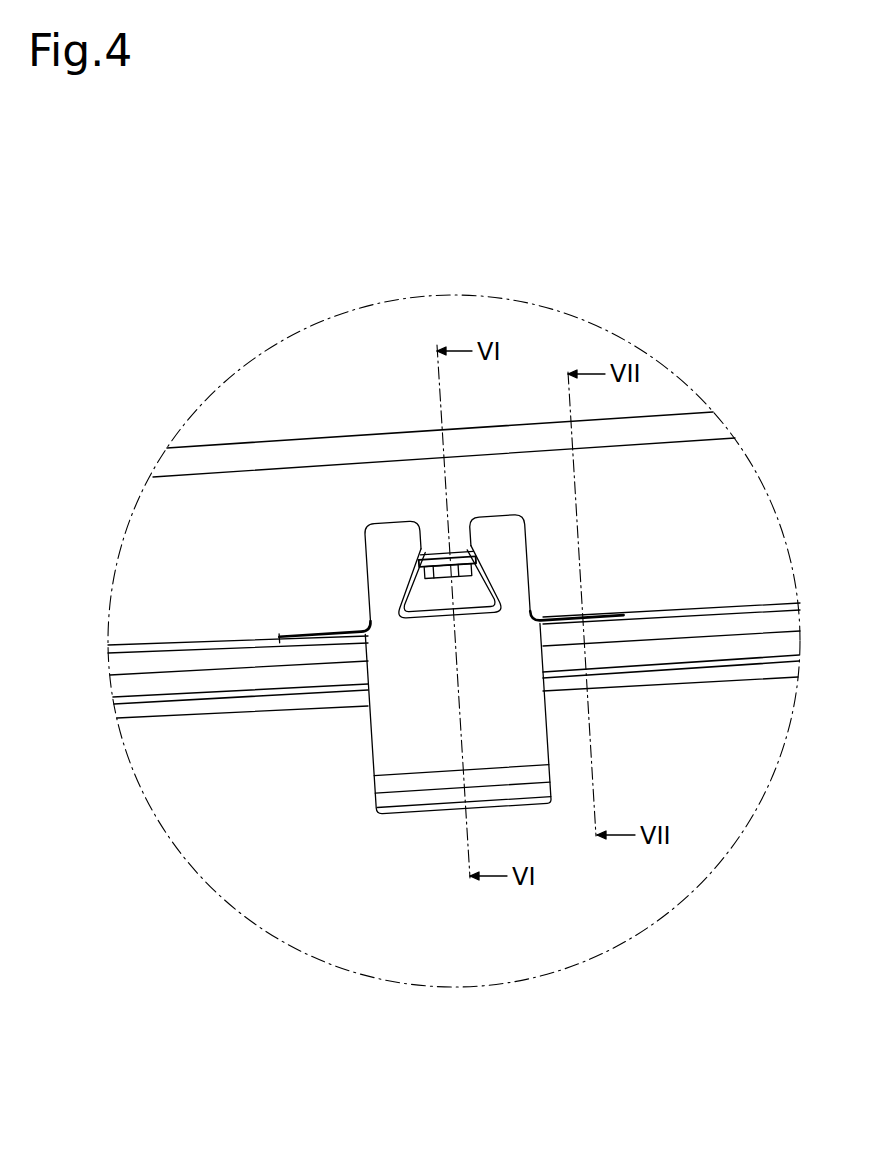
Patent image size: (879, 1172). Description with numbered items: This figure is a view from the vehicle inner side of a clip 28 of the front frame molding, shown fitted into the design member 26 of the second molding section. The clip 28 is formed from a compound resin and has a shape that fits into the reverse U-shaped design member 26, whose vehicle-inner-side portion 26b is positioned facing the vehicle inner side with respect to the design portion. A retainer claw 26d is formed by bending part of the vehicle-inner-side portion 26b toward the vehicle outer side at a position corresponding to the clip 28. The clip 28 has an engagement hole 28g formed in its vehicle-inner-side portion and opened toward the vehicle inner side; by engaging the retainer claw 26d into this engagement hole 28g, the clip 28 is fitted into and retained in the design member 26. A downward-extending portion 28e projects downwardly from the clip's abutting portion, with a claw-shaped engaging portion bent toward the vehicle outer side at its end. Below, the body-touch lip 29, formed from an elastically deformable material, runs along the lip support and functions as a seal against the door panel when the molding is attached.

The design member 26 is at (295, 439).
The vehicle-inner-side portion 26b is at (705, 560).
The retainer claw 26d is at (430, 548).
The clip 28 is at (391, 819).
The downward-extending portion 28e is at (403, 747).
The engagement hole 28g is at (438, 590).
The body-touch lip 29 is at (212, 720).